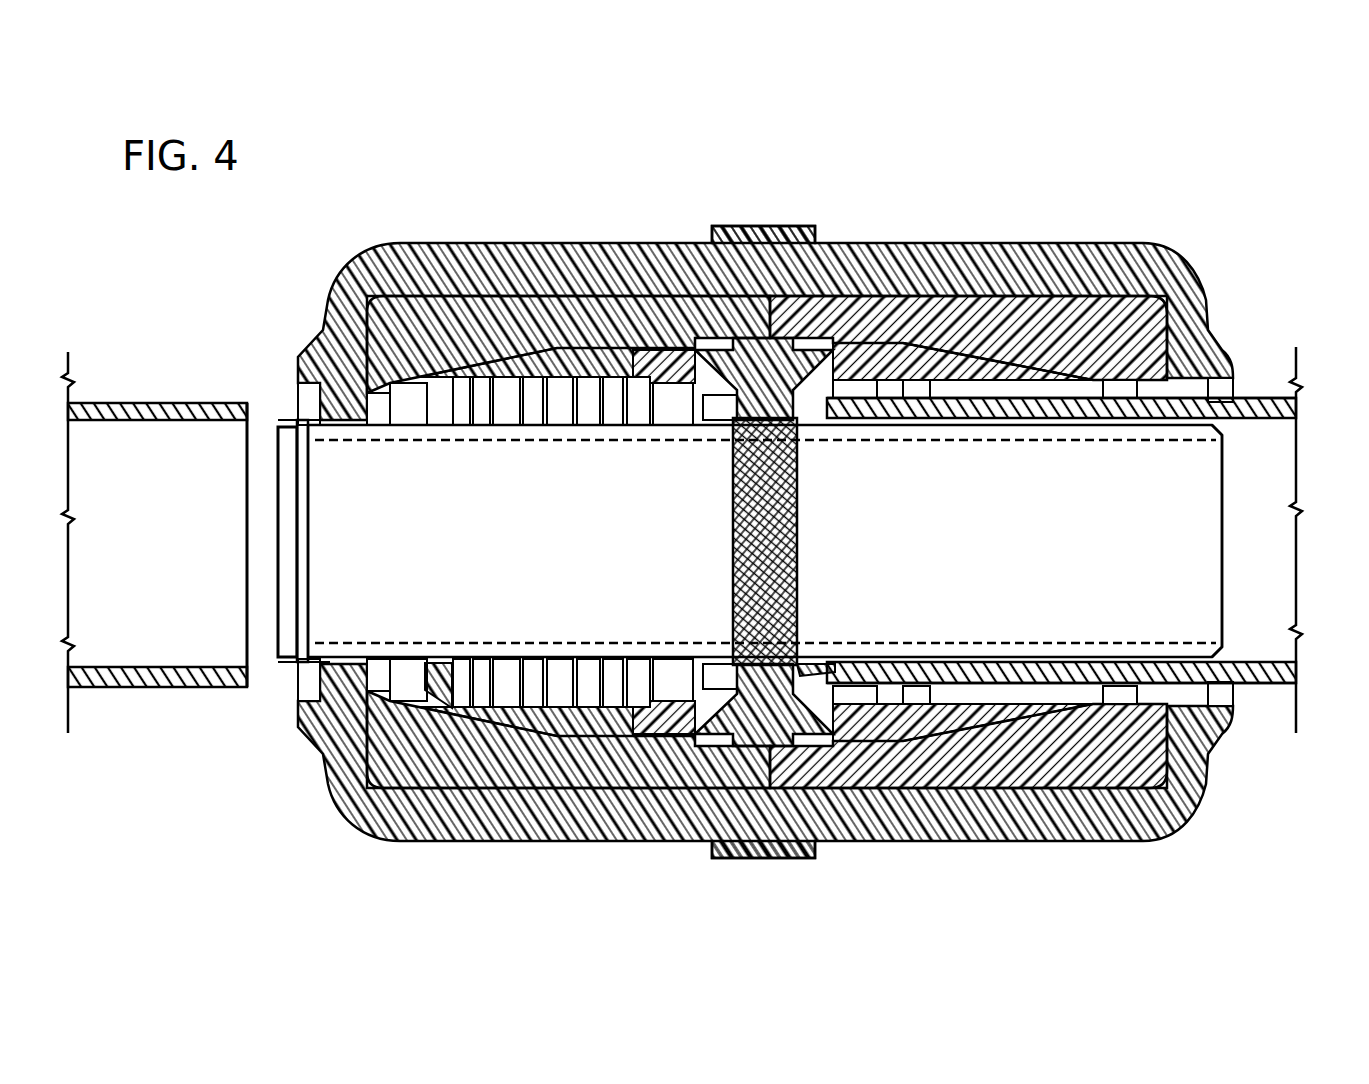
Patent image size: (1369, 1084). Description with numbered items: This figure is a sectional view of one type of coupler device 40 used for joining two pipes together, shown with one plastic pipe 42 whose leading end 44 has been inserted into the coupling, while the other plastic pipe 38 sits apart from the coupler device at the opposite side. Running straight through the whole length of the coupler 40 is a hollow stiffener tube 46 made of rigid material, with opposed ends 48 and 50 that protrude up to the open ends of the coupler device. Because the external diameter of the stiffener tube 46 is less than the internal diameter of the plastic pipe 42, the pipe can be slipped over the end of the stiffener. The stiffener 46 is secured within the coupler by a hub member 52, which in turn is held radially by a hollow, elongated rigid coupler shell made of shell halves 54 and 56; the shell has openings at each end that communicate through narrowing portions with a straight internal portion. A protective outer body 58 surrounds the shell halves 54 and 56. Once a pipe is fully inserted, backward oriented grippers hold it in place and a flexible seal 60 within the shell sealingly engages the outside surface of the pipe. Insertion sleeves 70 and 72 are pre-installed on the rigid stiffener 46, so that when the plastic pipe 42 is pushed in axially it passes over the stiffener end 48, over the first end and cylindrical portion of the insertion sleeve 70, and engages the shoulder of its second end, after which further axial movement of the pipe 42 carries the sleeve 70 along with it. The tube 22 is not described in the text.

The tube 22 is at (1264, 396).
The plastic pipe 38 is at (172, 687).
The coupler device 40 is at (1246, 250).
The plastic pipe 42 is at (1264, 398).
The leading end 44 is at (860, 420).
The stiffener tube 46 is at (612, 548).
The end of stiffener tube 48 is at (1229, 526).
The end of stiffener tube 50 is at (304, 592).
The hub member 52 is at (790, 332).
The shell half 54 is at (990, 296).
The shell half 56 is at (560, 325).
The protective outer body 58 is at (734, 228).
The flexible seal 60 is at (1045, 296).
The insertion sleeve 70 is at (806, 662).
The insertion sleeve 72 is at (431, 661).